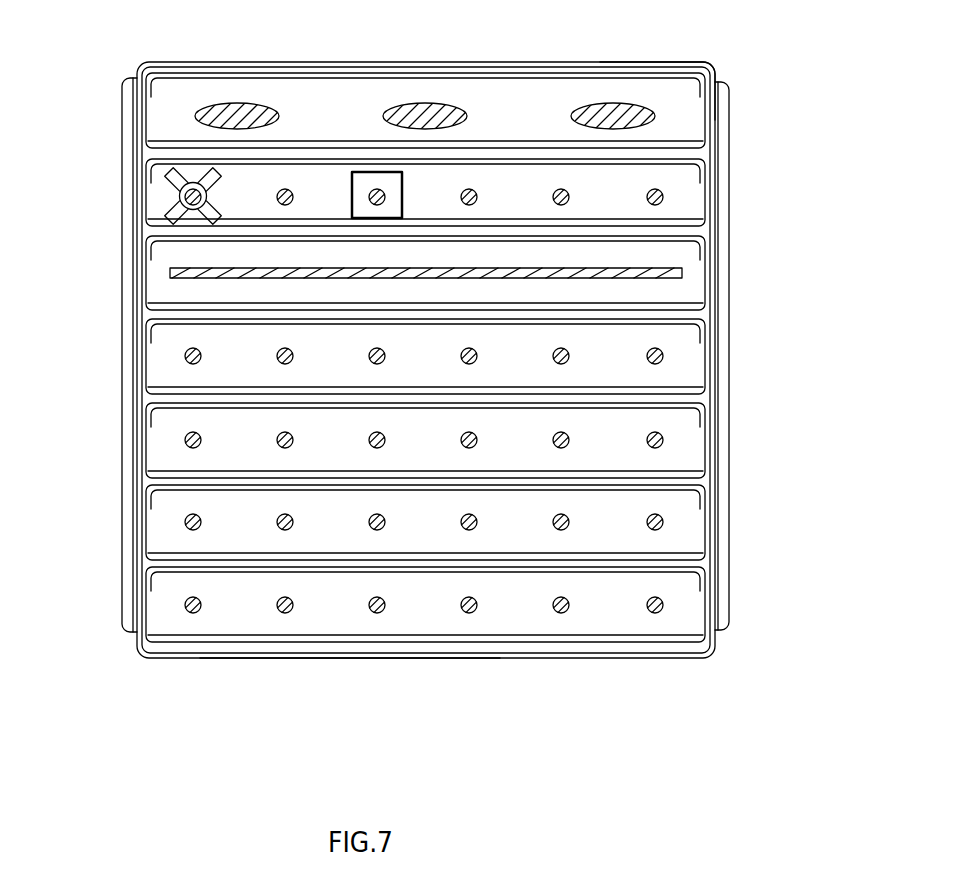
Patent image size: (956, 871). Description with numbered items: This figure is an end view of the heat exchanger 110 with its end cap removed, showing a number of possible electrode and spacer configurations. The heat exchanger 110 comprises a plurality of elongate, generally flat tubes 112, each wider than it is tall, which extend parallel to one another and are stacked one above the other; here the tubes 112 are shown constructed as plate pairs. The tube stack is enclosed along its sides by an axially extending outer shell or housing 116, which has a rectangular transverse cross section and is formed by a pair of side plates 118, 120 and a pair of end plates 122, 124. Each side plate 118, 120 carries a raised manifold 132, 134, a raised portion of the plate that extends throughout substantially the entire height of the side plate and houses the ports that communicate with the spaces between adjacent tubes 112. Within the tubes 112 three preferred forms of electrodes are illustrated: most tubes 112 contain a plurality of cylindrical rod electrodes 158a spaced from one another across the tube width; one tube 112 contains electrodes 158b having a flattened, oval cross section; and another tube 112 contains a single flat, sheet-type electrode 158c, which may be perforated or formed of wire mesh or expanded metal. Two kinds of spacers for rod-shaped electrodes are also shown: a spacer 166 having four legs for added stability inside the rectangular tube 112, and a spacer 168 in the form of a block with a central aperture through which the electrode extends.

The heat exchanger 110 is at (125, 54).
The tube 112 is at (197, 72).
The housing 116 is at (656, 60).
The side plate 118 is at (137, 362).
The side plate 120 is at (720, 182).
The end plate 122 is at (452, 62).
The end plate 124 is at (333, 658).
The raised manifold 132 is at (122, 272).
The raised manifold 134 is at (730, 199).
The electrode 158a is at (663, 199).
The electrode 158b is at (270, 103).
The electrode 158c is at (200, 278).
The spacer 166 is at (185, 194).
The spacer 168 is at (355, 187).